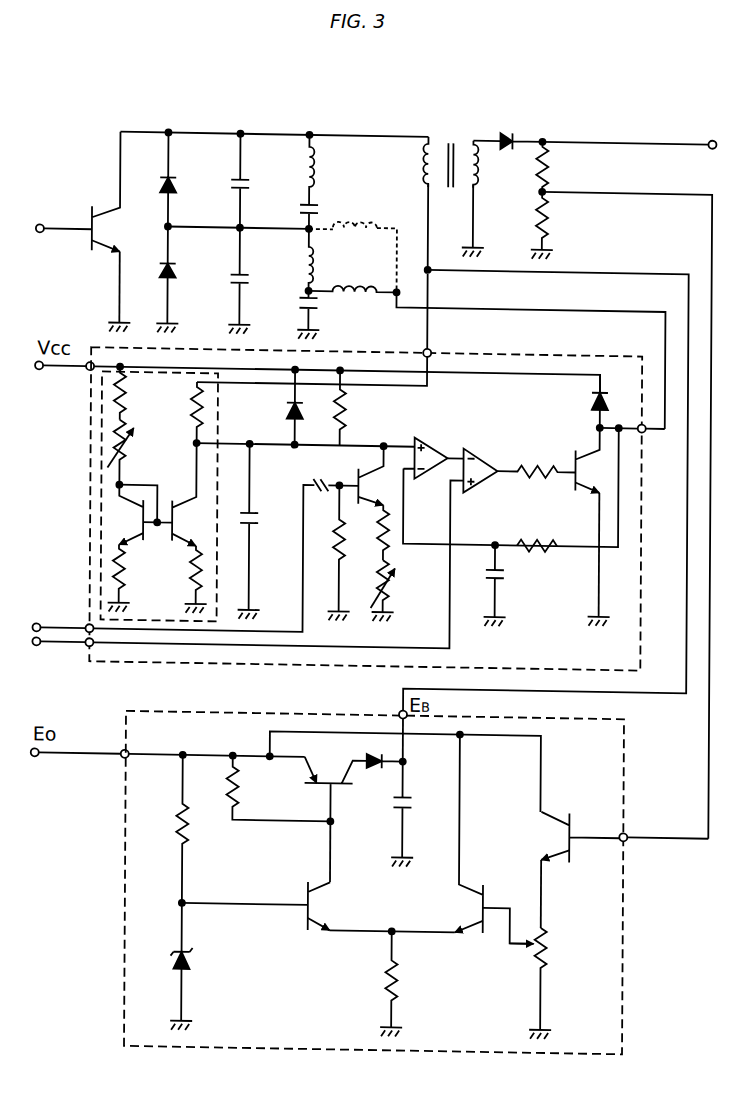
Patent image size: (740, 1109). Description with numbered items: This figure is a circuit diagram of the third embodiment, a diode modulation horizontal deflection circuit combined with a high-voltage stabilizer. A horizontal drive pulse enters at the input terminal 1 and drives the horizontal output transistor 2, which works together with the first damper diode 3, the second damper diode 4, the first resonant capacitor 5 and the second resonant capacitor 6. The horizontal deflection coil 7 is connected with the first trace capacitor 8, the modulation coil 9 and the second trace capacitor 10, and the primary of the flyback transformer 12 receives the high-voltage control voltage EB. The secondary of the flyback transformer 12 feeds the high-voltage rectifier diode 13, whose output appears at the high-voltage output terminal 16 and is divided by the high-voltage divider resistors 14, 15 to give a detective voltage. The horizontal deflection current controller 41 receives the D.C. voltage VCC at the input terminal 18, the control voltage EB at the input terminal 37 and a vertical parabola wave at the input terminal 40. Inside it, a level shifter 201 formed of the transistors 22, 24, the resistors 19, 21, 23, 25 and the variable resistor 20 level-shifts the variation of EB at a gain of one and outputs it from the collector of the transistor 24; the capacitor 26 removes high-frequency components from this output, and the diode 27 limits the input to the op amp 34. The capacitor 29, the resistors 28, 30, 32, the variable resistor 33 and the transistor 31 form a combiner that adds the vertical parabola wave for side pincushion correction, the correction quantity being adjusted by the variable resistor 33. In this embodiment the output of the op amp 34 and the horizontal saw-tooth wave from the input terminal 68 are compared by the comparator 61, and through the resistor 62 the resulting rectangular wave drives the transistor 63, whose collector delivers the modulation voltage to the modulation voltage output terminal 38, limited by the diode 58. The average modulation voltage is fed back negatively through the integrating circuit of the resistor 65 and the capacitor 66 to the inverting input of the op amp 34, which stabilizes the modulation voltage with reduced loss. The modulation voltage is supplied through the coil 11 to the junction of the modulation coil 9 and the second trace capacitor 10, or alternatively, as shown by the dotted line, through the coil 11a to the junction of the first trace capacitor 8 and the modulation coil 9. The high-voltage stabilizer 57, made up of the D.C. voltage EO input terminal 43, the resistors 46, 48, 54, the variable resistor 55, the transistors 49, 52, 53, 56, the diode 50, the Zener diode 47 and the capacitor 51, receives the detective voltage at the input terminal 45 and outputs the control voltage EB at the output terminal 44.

The horizontal drive pulse input terminal 1 is at (40, 240).
The horizontal output transistor 2 is at (101, 259).
The first damper diode 3 is at (158, 187).
The second damper diode 4 is at (160, 283).
The first resonant capacitor 5 is at (229, 184).
The second resonant capacitor 6 is at (229, 285).
The horizontal deflection coil 7 is at (314, 168).
The first trace capacitor 8 is at (298, 208).
The modulation coil 9 is at (313, 248).
The second trace capacitor 10 is at (314, 310).
The coil 11 is at (368, 298).
The coil 11a is at (385, 223).
The flyback transformer 12 is at (452, 130).
The high-voltage rectifier diode 13 is at (500, 130).
The high-voltage divider resistor 14 is at (546, 165).
The high-voltage divider resistor 15 is at (546, 222).
The high-voltage output terminal 16 is at (710, 133).
The D.C. voltage VCC input terminal 18 is at (86, 376).
The resistor 19 is at (126, 398).
The variable resistor 20 is at (130, 450).
The level shifter 201 is at (101, 460).
The resistor 21 is at (204, 410).
The transistor 22 is at (125, 527).
The resistor 23 is at (122, 583).
The transistor 24 is at (182, 530).
The resistor 25 is at (190, 556).
The capacitor 26 is at (256, 520).
The diode 27 is at (288, 402).
The resistor 28 is at (346, 405).
The capacitor 29 is at (313, 480).
The resistor 30 is at (335, 548).
The transistor 31 is at (366, 500).
The resistor 32 is at (392, 540).
The variable resistor 33 is at (394, 588).
The op amp 34 is at (428, 440).
The high-voltage control voltage EB input terminal 37 is at (432, 349).
The modulation voltage output terminal 38 is at (645, 428).
The vertical parabola wave voltage input terminal 40 is at (88, 629).
The horizontal deflection current controller 41 is at (134, 667).
The D.C. voltage EO input terminal 43 is at (124, 763).
The high-voltage control voltage EB output terminal 44 is at (400, 712).
The high-voltage detective voltage input terminal 45 is at (629, 830).
The resistor 46 is at (176, 816).
The Zener diode 47 is at (194, 963).
The resistor 48 is at (226, 803).
The transistor 49 is at (340, 786).
The diode 50 is at (364, 759).
The capacitor 51 is at (414, 797).
The transistor 52 is at (320, 906).
The transistor 53 is at (472, 906).
The resistor 54 is at (400, 962).
The variable resistor 55 is at (552, 944).
The transistor 56 is at (548, 830).
The high-voltage stabilizer 57 is at (126, 942).
The diode 58 is at (606, 396).
The comparator 61 is at (483, 455).
The resistor 62 is at (530, 462).
The transistor 63 is at (581, 487).
The resistor 65 is at (545, 548).
The capacitor 66 is at (500, 582).
The input terminal of horizontal saw-tooth wave voltage 68 is at (88, 651).